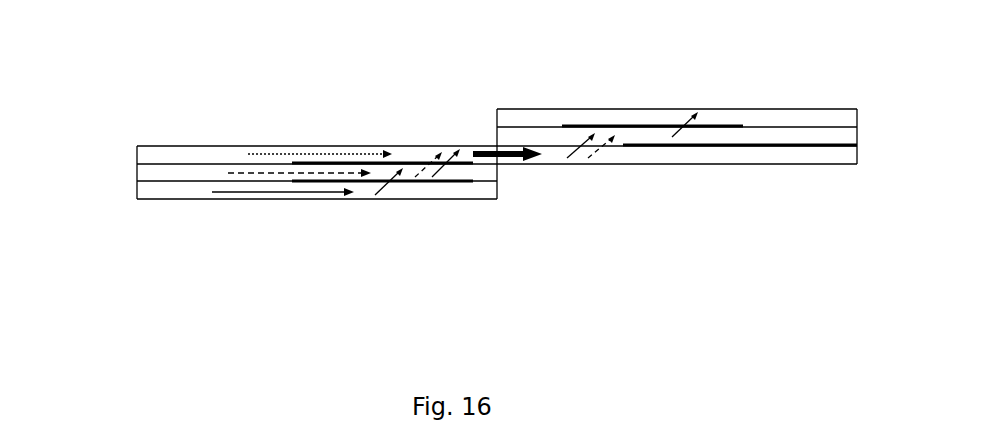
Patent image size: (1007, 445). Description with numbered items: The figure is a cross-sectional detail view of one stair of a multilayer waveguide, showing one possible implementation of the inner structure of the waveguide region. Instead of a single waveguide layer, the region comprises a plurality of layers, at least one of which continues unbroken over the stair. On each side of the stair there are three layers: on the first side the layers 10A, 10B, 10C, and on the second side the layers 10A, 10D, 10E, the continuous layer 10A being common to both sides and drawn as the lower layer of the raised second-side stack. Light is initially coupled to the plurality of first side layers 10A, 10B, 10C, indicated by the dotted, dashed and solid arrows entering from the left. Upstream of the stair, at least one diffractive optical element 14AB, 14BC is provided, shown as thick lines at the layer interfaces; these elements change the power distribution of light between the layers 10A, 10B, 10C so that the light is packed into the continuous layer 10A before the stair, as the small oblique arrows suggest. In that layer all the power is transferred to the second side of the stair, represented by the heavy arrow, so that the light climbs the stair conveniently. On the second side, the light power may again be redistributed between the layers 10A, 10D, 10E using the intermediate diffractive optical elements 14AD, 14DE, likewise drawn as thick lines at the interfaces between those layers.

The continuous waveguide layer 10A is at (137, 150).
The first side layer 10B is at (137, 175).
The first side layer 10C is at (137, 191).
The second side layer 10D is at (857, 133).
The second side layer 10E is at (828, 108).
The diffractive optical element 14AB is at (327, 162).
The diffractive optical element 14BC is at (325, 185).
The intermediate diffractive optical element 14DE is at (659, 123).
The intermediate diffractive optical element 14AD is at (653, 146).